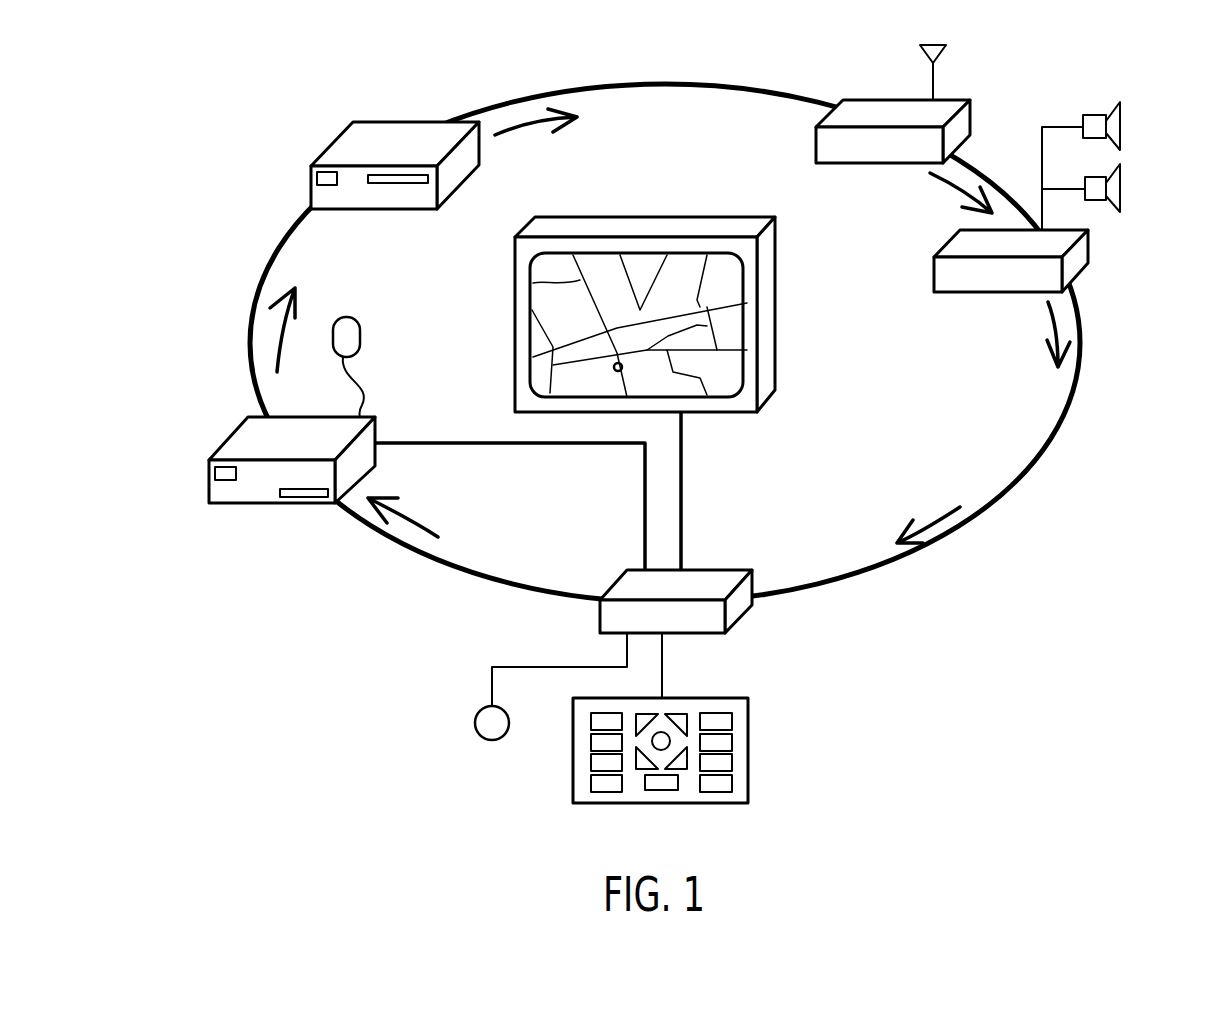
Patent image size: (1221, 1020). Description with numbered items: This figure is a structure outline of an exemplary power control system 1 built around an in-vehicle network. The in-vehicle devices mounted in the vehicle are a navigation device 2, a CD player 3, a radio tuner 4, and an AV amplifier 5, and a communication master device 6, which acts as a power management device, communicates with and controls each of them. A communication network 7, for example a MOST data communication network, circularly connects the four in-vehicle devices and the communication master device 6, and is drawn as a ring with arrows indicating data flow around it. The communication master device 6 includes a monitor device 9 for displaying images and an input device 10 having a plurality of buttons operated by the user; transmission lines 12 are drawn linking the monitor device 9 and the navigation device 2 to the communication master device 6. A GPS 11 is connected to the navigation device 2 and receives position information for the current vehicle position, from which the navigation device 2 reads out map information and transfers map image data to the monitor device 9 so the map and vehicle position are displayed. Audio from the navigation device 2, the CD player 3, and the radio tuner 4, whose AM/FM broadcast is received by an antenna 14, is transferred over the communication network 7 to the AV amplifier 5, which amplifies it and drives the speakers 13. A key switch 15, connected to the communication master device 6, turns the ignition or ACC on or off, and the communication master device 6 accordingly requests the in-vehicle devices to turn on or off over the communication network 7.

The power control system 1 is at (218, 123).
The navigation device 2 is at (235, 443).
The CD player 3 is at (370, 128).
The radio tuner 4 is at (868, 108).
The AV amplifier 5 is at (1080, 250).
The communication master device 6 is at (700, 627).
The communication network 7 is at (1057, 442).
The monitor device 9 is at (763, 332).
The input device 10 is at (743, 718).
The GPS 11 is at (340, 338).
The connection cables 12 is at (543, 445).
The speaker 13 is at (1110, 127).
The antenna 14 is at (936, 80).
The key switch 15 is at (480, 723).